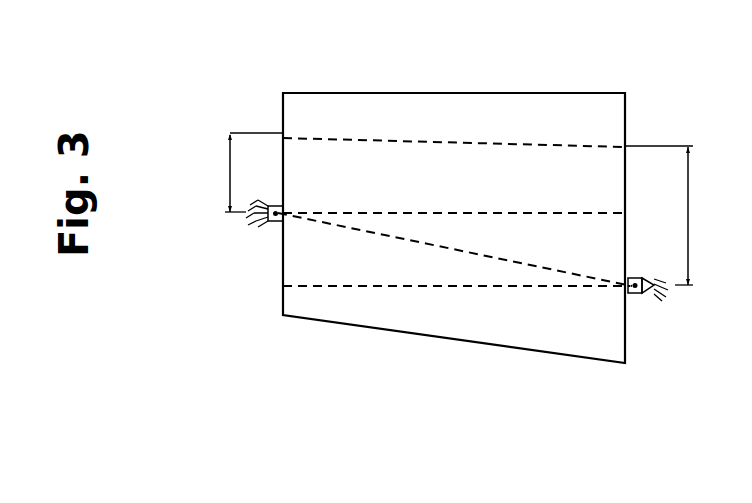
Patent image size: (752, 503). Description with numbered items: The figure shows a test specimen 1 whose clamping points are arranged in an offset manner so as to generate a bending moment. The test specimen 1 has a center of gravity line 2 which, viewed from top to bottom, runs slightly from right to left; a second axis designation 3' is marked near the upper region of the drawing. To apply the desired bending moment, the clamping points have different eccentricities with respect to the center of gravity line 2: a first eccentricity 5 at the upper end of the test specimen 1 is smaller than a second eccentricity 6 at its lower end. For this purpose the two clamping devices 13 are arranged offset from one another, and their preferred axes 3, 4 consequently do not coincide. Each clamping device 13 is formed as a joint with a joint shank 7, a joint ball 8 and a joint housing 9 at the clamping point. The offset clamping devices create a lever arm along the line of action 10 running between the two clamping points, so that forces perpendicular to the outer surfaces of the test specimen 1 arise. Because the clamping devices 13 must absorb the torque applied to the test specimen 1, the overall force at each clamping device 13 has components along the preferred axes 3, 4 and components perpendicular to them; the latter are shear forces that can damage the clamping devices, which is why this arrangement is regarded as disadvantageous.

The test specimen 1 is at (308, 112).
The center of gravity line 2 is at (436, 140).
The preferred axis of the clamping device 3 is at (454, 304).
The axis line 3' is at (417, 10).
The preferred axis of the clamping device 4 is at (445, 289).
The eccentricity 5 is at (230, 168).
The eccentricity 6 is at (688, 207).
The joint shank 7 is at (266, 216).
The joint ball 8 is at (270, 221).
The joint housing 9 is at (277, 224).
The line of action 10 is at (555, 273).
The flexible clamping device 13 is at (279, 205).